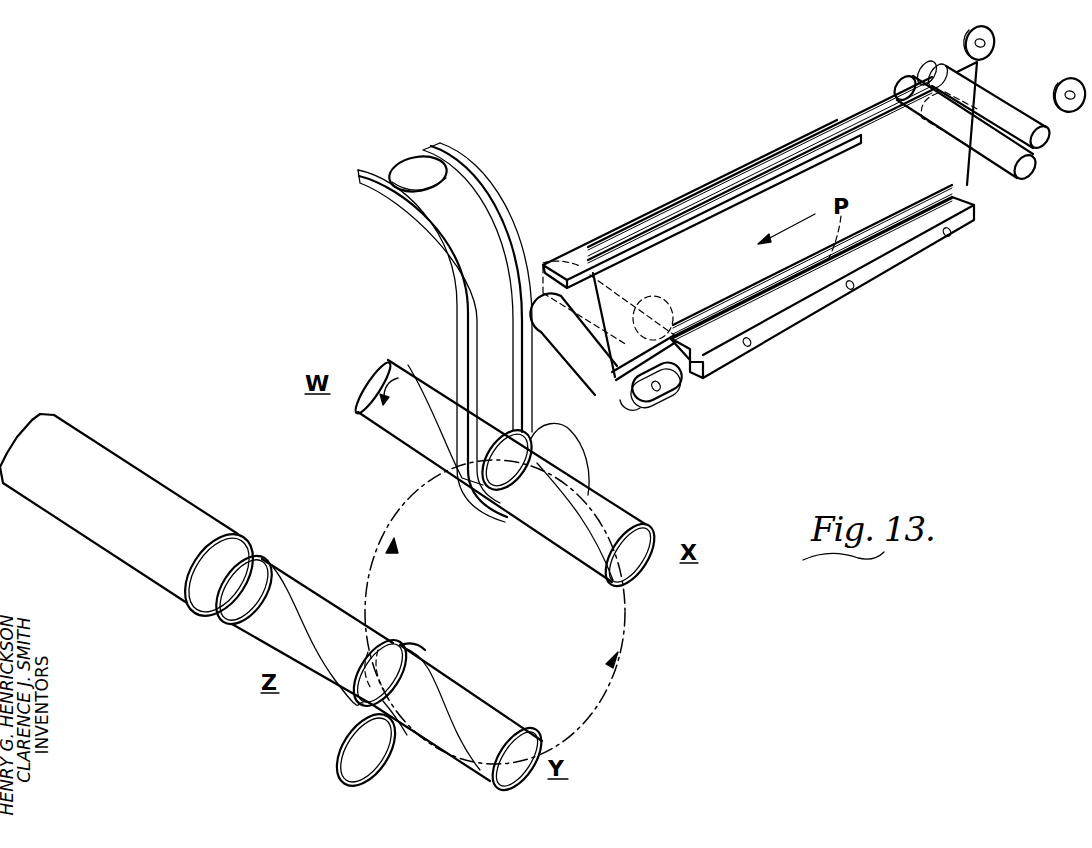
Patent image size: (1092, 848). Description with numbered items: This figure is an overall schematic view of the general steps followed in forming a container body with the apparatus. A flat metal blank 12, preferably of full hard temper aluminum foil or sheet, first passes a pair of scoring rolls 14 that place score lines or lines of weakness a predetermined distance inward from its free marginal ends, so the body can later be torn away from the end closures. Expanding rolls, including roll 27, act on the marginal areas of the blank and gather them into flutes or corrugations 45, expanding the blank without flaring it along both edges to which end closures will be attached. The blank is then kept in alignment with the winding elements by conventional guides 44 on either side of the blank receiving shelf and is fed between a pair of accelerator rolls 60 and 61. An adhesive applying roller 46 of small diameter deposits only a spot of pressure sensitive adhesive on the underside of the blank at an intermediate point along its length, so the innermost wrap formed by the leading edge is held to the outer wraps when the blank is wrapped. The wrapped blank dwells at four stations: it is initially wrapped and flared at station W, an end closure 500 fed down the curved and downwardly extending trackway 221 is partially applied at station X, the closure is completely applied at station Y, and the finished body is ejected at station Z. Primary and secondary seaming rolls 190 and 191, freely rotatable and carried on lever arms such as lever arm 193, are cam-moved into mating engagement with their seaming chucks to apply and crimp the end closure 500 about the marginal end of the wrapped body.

The flat metal blank 12 is at (907, 184).
The scoring rolls 14 is at (994, 36).
The roller 27 is at (993, 107).
The guide 44 is at (833, 298).
The flutes or corrugations 45 is at (640, 233).
The adhesive applying roller 46 is at (640, 398).
The accelerator roll 60 is at (643, 305).
The accelerator roll 61 is at (580, 346).
The primary end seaming roll 190 is at (578, 453).
The secondary end seaming roll 191 is at (350, 762).
The lever arm 193 is at (67, 435).
The curved trackway 221 is at (502, 184).
The end closure 500 is at (410, 158).